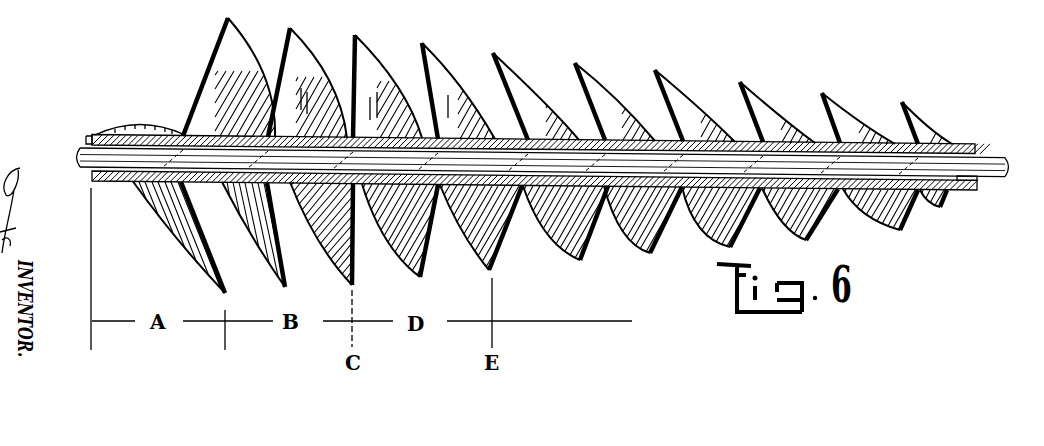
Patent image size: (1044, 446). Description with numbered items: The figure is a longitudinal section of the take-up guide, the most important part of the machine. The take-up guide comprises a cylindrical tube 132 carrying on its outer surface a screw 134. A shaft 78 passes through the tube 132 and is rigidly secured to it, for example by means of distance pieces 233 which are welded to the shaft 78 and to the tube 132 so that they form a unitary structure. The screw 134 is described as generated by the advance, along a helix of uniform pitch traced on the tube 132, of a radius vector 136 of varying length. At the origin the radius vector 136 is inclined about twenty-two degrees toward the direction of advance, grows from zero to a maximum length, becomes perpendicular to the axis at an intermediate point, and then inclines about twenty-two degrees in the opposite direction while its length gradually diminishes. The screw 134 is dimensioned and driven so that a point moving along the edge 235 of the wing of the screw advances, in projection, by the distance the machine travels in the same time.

The shaft 78 is at (1002, 160).
The cylindrical tube 132 is at (900, 142).
The screw 134 is at (768, 110).
The radius vector 136 is at (204, 80).
The distance pieces 233 is at (104, 147).
The edge of the wing of the screw 235 is at (601, 76).